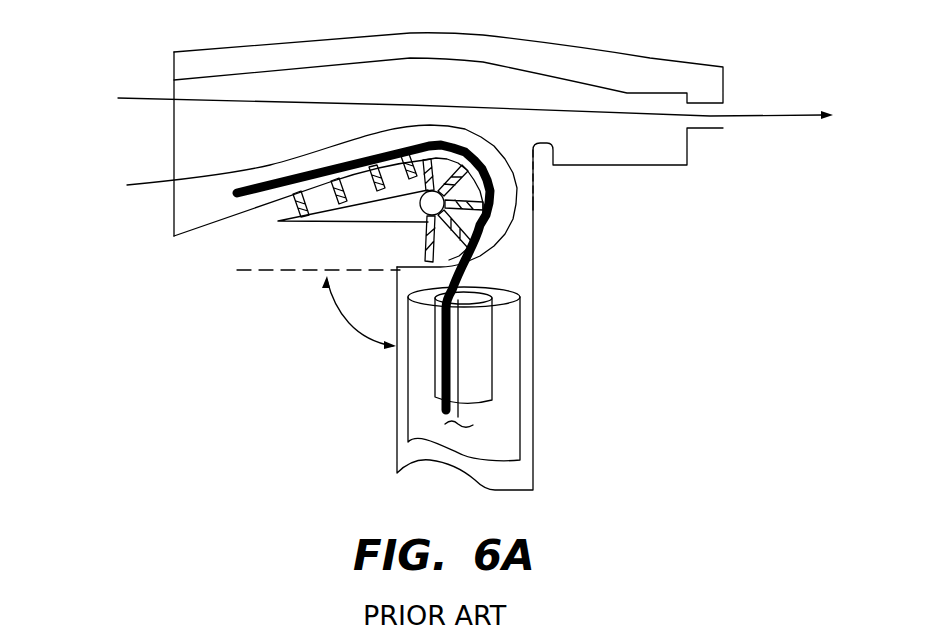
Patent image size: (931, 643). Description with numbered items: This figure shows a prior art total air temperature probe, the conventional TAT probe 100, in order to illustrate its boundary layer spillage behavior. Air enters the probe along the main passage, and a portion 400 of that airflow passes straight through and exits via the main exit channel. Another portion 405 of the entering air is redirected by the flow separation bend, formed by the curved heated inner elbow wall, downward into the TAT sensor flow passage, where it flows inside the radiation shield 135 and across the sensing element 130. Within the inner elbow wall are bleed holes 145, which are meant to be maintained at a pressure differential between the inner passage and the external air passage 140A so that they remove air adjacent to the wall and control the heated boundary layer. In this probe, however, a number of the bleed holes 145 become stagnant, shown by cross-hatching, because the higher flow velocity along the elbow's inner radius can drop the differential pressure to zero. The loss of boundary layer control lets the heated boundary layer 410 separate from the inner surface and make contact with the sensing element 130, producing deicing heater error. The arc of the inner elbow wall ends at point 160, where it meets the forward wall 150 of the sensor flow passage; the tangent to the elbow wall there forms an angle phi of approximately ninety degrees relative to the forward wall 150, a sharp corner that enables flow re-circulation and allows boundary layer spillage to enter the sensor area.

The conventional TAT probe 100 is at (146, 42).
The portion of airflow exiting through main exit channel 400 is at (752, 114).
The boundary layer 410 is at (275, 166).
The redirected portion of airflow 405 is at (513, 213).
The external air passage 140A is at (383, 200).
The bleed holes 145 is at (430, 206).
The point 160 is at (400, 270).
The forward wall 150 is at (395, 424).
The radiation shield 135 is at (523, 358).
The sensing element 130 is at (523, 413).